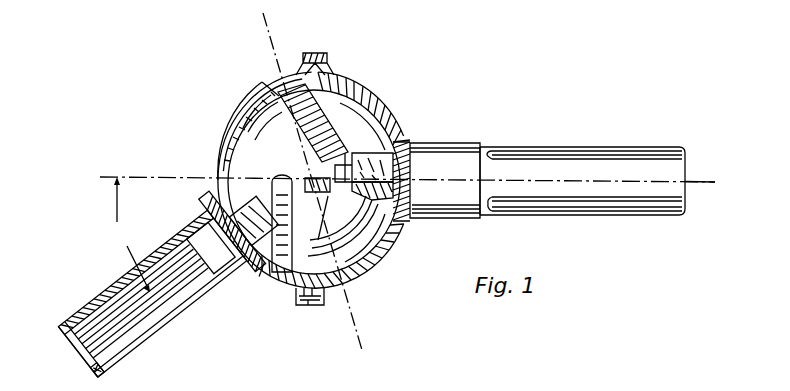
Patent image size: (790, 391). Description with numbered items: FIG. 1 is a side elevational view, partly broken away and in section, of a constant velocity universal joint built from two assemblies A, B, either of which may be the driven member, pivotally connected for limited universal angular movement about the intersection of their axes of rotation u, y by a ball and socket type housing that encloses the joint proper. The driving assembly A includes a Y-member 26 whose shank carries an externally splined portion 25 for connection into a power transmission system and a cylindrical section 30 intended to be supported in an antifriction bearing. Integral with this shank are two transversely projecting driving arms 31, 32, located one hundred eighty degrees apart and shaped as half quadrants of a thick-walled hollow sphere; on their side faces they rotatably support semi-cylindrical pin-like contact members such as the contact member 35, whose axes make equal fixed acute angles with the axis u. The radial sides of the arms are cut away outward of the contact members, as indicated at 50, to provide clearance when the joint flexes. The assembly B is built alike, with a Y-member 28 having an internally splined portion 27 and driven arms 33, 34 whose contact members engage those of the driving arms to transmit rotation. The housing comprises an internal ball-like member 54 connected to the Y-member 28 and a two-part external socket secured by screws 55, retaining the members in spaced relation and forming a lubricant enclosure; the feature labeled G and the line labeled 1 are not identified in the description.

The axis of bevel gear 1 is at (268, 14).
The housing boss G is at (347, 70).
The cut-away portion 50 is at (383, 96).
The driving arm 32 is at (395, 110).
The driven arm 34 is at (262, 124).
The internal ball-like member 54 is at (226, 153).
The driving assembly A is at (430, 158).
The Y-member 26 is at (486, 157).
The externally splined portion 25 is at (563, 165).
The axis of rotation u is at (688, 182).
The cylindrical section 30 is at (450, 208).
The contact member 35 is at (320, 190).
The driven arm 33 is at (272, 278).
The screws 55 is at (322, 305).
The driving arm 31 is at (366, 277).
The driven assembly B is at (103, 286).
The internally splined portion 27 is at (80, 335).
The Y-member 28 is at (163, 330).
The axis of rotation y is at (60, 363).